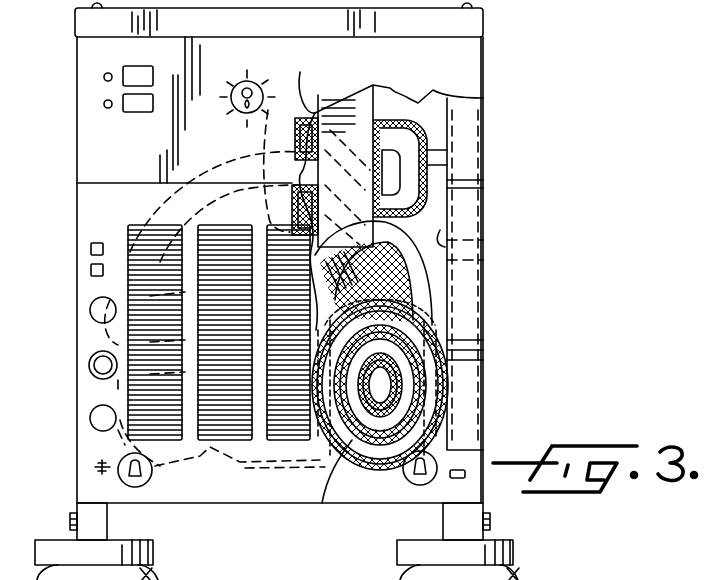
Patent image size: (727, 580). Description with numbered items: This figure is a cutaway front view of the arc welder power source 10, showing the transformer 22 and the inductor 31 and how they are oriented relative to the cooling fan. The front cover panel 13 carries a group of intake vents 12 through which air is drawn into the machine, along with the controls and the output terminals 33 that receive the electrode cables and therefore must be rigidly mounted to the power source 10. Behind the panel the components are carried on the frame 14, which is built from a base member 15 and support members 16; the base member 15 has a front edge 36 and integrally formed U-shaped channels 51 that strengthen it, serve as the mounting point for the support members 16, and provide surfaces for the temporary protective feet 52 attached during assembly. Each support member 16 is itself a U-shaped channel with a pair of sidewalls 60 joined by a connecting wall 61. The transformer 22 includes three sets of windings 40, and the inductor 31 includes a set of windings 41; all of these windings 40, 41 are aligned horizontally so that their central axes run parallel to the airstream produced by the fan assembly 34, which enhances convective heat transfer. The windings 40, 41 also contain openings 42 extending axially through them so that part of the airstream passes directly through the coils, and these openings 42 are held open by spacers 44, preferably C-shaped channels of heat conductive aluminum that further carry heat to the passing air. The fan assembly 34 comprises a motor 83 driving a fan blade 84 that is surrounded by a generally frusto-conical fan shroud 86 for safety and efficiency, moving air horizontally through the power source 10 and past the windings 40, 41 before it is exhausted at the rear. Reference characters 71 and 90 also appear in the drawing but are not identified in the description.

The arc welder power source 10 is at (553, 101).
The vents 12 is at (92, 249).
The front cover panel 13 is at (110, 433).
The frame 14 is at (460, 262).
The base member 15 is at (107, 512).
The support members 16 is at (470, 212).
The transformer 22 is at (92, 395).
The inductor 31 is at (430, 143).
The output terminals 33 is at (77, 503).
The fan assembly 34 is at (462, 189).
The front edge 36 is at (265, 490).
The windings 40 is at (100, 345).
The windings 41 is at (430, 163).
The openings 42 is at (422, 135).
The spacers 44 is at (300, 150).
The U-shaped channels 51 is at (44, 548).
The protective feet 52 is at (150, 578).
The sidewalls 60 is at (445, 240).
The connecting wall 61 is at (440, 352).
The base 71 is at (285, 567).
The motor 83 is at (373, 273).
The fan blade 84 is at (219, 318).
The fan shroud 86 is at (80, 299).
The frame member 90 is at (294, 579).